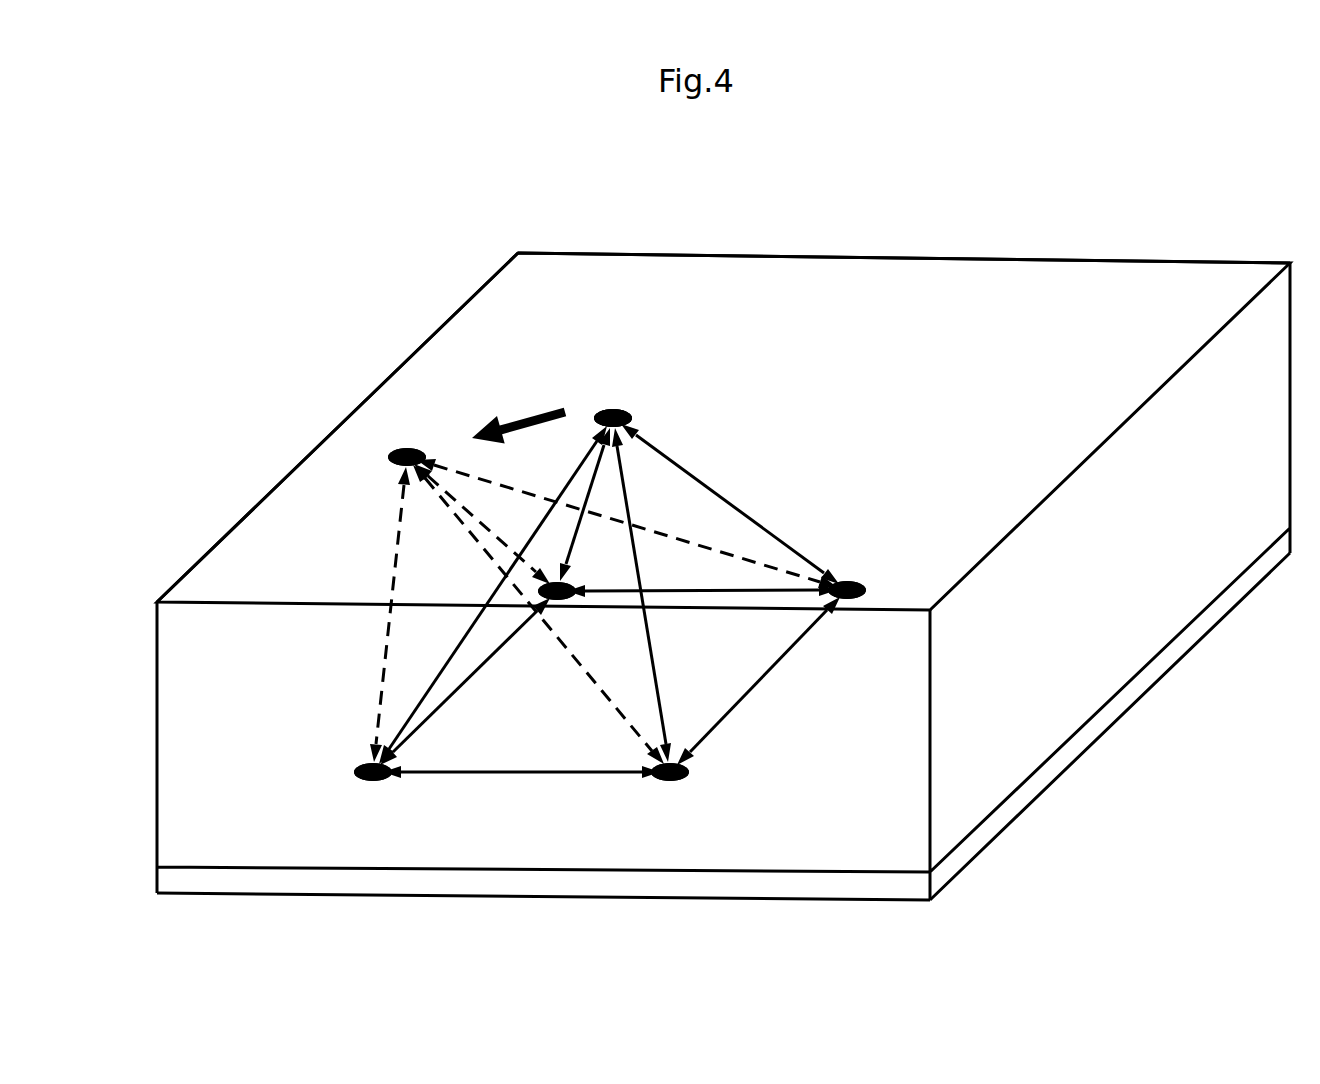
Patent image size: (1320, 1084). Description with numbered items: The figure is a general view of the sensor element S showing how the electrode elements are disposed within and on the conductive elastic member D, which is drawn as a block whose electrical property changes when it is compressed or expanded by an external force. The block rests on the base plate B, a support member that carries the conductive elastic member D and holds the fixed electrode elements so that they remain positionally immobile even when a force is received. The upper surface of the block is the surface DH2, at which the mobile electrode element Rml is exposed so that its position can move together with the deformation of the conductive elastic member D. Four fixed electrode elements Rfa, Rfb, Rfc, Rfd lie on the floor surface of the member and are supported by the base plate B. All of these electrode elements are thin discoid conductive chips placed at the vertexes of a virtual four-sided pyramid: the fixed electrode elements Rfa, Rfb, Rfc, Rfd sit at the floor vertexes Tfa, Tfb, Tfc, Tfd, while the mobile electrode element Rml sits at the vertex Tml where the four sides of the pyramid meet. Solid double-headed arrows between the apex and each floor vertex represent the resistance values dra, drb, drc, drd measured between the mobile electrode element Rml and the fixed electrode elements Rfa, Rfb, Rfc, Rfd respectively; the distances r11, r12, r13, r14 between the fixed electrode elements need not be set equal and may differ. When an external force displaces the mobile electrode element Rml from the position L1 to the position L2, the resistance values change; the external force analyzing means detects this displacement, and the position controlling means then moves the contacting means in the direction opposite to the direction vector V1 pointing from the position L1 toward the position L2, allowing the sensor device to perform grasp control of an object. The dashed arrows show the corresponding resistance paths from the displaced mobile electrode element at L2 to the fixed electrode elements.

The sensor element S is at (316, 330).
The base plate B is at (985, 853).
The surface of the conductive elastic element DH2 is at (1005, 292).
The conductive elastic member D is at (282, 468).
The mobile electrode element Rml is at (617, 408).
The apex vertex of the virtual four-sided pyramid Tml is at (602, 406).
The position of the mobile electrode element before displacement L1 is at (643, 413).
The position of the mobile electrode element after displacement L2 is at (389, 471).
The direction vector V1 is at (533, 431).
The fixed electrode element Rfc is at (848, 580).
The floor vertex of the virtual four-sided pyramid Tfc is at (859, 609).
The fixed electrode element Rfd is at (576, 594).
The floor vertex of the virtual four-sided pyramid Tfd is at (566, 609).
The fixed electrode element Rfa is at (378, 784).
The floor vertex of the virtual four-sided pyramid Tfa is at (353, 773).
The fixed electrode element Rfb is at (675, 784).
The floor vertex of the virtual four-sided pyramid Tfb is at (697, 772).
The resistance value dra is at (438, 668).
The resistance value drb is at (657, 677).
The resistance value drc is at (746, 512).
The resistance value drd is at (582, 512).
The distance between electrode elements r11 is at (506, 774).
The distance between electrode elements r12 is at (765, 675).
The distance between electrode elements r13 is at (705, 592).
The distance between electrode elements r14 is at (452, 697).